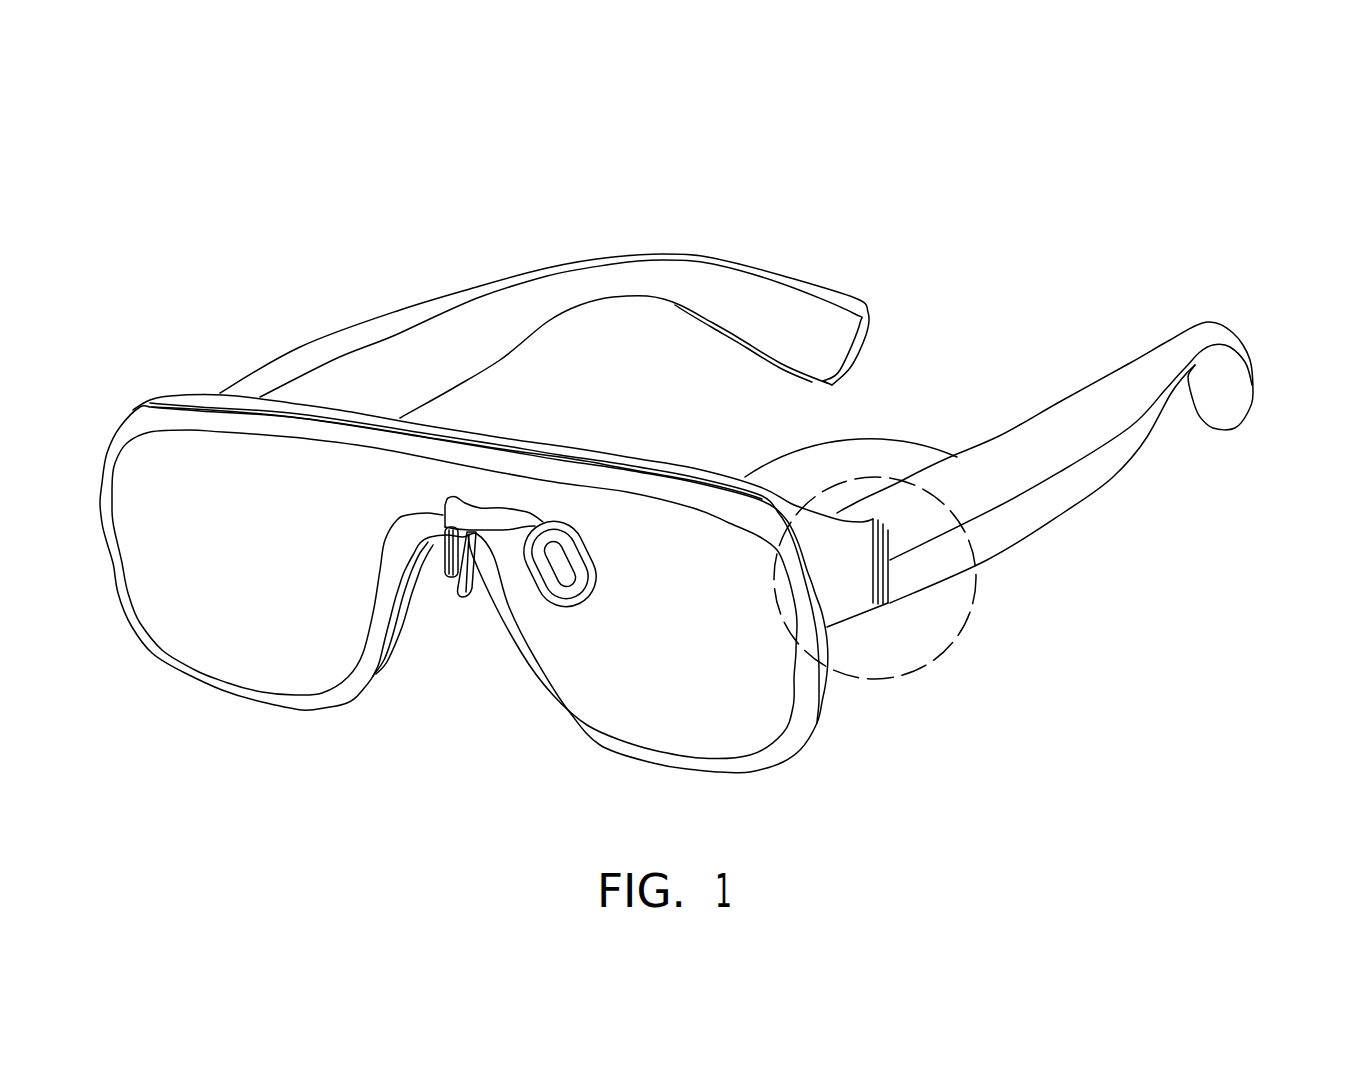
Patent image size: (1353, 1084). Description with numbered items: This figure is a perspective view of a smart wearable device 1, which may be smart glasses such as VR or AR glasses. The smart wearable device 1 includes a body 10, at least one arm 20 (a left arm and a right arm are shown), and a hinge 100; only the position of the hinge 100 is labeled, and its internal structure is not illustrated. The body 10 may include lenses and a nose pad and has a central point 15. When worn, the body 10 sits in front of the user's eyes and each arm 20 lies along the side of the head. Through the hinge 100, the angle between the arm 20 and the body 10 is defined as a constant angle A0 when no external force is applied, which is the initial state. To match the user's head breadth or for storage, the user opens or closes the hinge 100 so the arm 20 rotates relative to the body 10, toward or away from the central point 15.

The smart wearable device 1 is at (105, 119).
The body 10 is at (638, 459).
The central point 15 is at (438, 440).
The arm 20 is at (842, 329).
The hinge 100 is at (994, 571).
The angle A0 is at (860, 541).